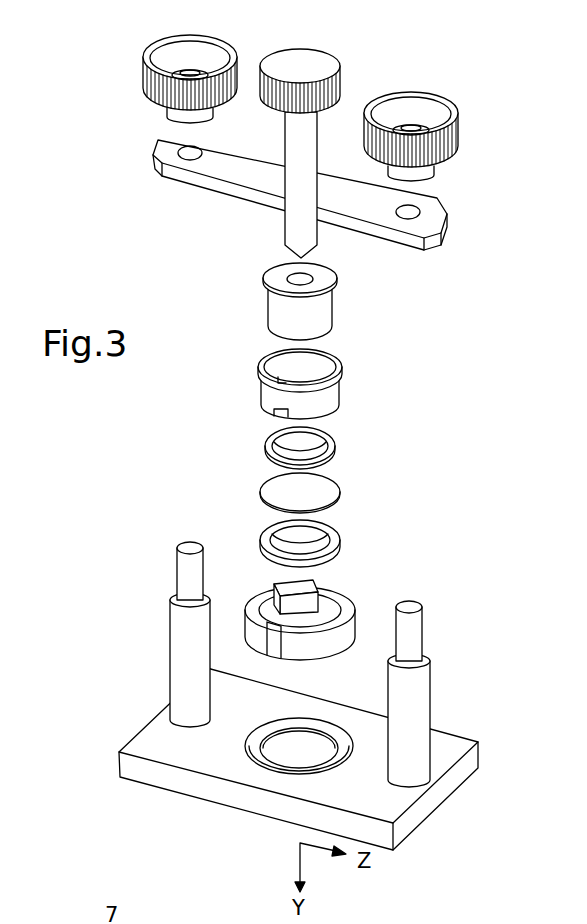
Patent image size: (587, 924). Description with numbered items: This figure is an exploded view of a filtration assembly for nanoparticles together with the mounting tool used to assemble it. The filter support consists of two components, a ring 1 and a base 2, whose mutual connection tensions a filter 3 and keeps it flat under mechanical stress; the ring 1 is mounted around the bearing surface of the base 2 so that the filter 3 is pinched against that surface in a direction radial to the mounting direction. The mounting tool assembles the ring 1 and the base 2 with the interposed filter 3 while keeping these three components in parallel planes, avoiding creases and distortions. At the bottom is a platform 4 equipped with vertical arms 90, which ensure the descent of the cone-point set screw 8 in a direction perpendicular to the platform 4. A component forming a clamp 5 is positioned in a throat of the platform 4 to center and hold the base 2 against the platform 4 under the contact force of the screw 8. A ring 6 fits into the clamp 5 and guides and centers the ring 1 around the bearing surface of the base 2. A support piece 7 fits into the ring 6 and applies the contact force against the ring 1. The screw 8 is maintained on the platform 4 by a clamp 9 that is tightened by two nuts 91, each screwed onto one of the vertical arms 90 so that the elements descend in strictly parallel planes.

The ring 1 is at (337, 453).
The base 2 is at (337, 547).
The filter 3 is at (338, 507).
The platform 4 is at (160, 740).
The clamp 5 is at (345, 638).
The ring 6 is at (332, 402).
The support piece 7 is at (325, 320).
The cone-point set screw 8 is at (305, 137).
The clamp 9 is at (243, 165).
The vertical arms 90 is at (188, 648).
The nuts 91 is at (182, 50).